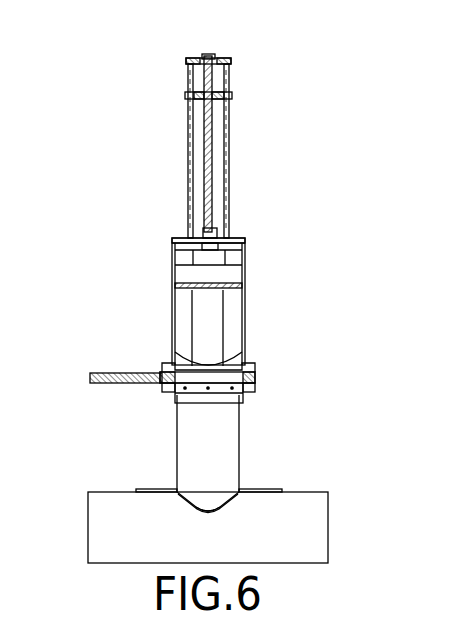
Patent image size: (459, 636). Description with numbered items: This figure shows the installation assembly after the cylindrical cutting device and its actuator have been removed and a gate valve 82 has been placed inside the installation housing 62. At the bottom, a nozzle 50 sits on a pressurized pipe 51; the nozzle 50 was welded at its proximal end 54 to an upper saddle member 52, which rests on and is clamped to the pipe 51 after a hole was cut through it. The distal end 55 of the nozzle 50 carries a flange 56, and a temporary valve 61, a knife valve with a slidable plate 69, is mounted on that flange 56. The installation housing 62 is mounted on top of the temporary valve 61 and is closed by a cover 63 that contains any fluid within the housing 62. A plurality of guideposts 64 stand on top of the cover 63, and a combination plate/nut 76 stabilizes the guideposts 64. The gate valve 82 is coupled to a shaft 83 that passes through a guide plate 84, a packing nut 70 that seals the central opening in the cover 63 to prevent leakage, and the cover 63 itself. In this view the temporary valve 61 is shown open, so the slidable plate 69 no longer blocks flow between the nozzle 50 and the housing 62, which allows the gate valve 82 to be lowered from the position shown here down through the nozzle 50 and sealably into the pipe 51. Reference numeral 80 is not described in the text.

The nozzle 50 is at (242, 445).
The pipe 51 is at (318, 492).
The upper saddle member 52 is at (155, 490).
The proximal end 54 is at (205, 508).
The distal end 55 is at (243, 400).
The flange 56 is at (163, 388).
The temporary valve 61 is at (158, 358).
The installation housing 62 is at (172, 300).
The cover 63 is at (240, 240).
The guideposts 64 is at (190, 80).
The slidable plate 69 is at (108, 373).
The packing nut 70 is at (213, 232).
The combination plate/nut 76 is at (217, 55).
The band 80 is at (172, 267).
The gate valve 82 is at (245, 300).
The shaft 83 is at (207, 152).
The guide plate 84 is at (217, 100).